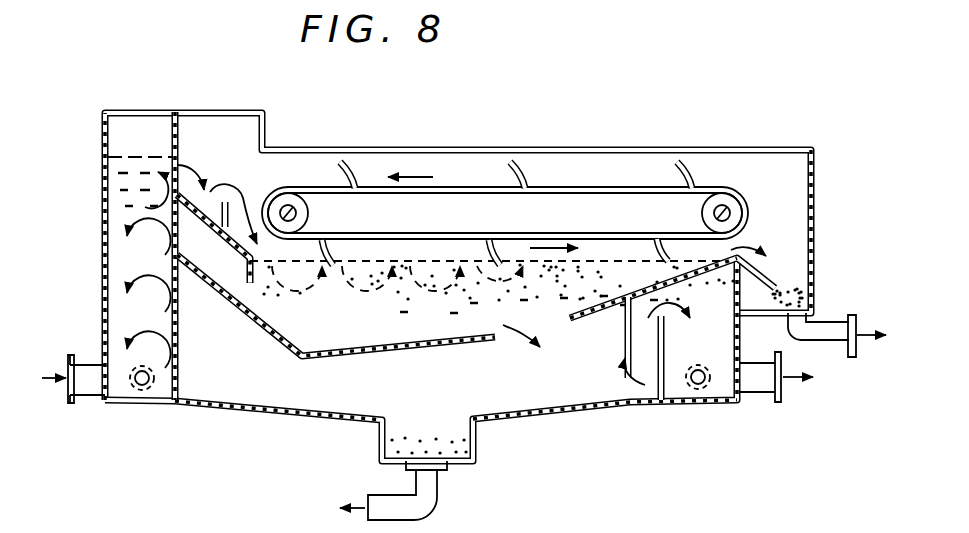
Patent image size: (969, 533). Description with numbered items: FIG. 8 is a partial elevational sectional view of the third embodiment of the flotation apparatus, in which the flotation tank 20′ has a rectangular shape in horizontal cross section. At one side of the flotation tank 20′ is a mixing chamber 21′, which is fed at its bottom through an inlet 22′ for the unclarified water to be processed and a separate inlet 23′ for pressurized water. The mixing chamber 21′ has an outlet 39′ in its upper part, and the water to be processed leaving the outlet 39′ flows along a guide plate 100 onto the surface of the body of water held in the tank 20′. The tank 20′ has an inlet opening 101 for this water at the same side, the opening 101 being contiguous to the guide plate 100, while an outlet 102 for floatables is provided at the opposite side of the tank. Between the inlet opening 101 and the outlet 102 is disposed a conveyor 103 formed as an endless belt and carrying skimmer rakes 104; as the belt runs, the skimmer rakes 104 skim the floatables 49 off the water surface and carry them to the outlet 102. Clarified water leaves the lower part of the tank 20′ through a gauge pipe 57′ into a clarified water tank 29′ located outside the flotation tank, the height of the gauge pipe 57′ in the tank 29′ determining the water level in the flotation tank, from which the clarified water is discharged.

The flotation tank 20′ is at (225, 408).
The mixing chamber 21′ is at (110, 249).
The inlet 22′ is at (90, 387).
The inlet 23′ is at (141, 388).
The outlet 39′ is at (172, 140).
The guide plate 100 is at (206, 222).
The inlet opening 101 is at (257, 222).
The outlet 102 is at (746, 236).
The conveyor 103 is at (595, 187).
The skimmer rakes 104 is at (520, 160).
The floatables 49 is at (771, 276).
The gauge pipe 57′ is at (690, 403).
The water tank 29′ is at (718, 403).